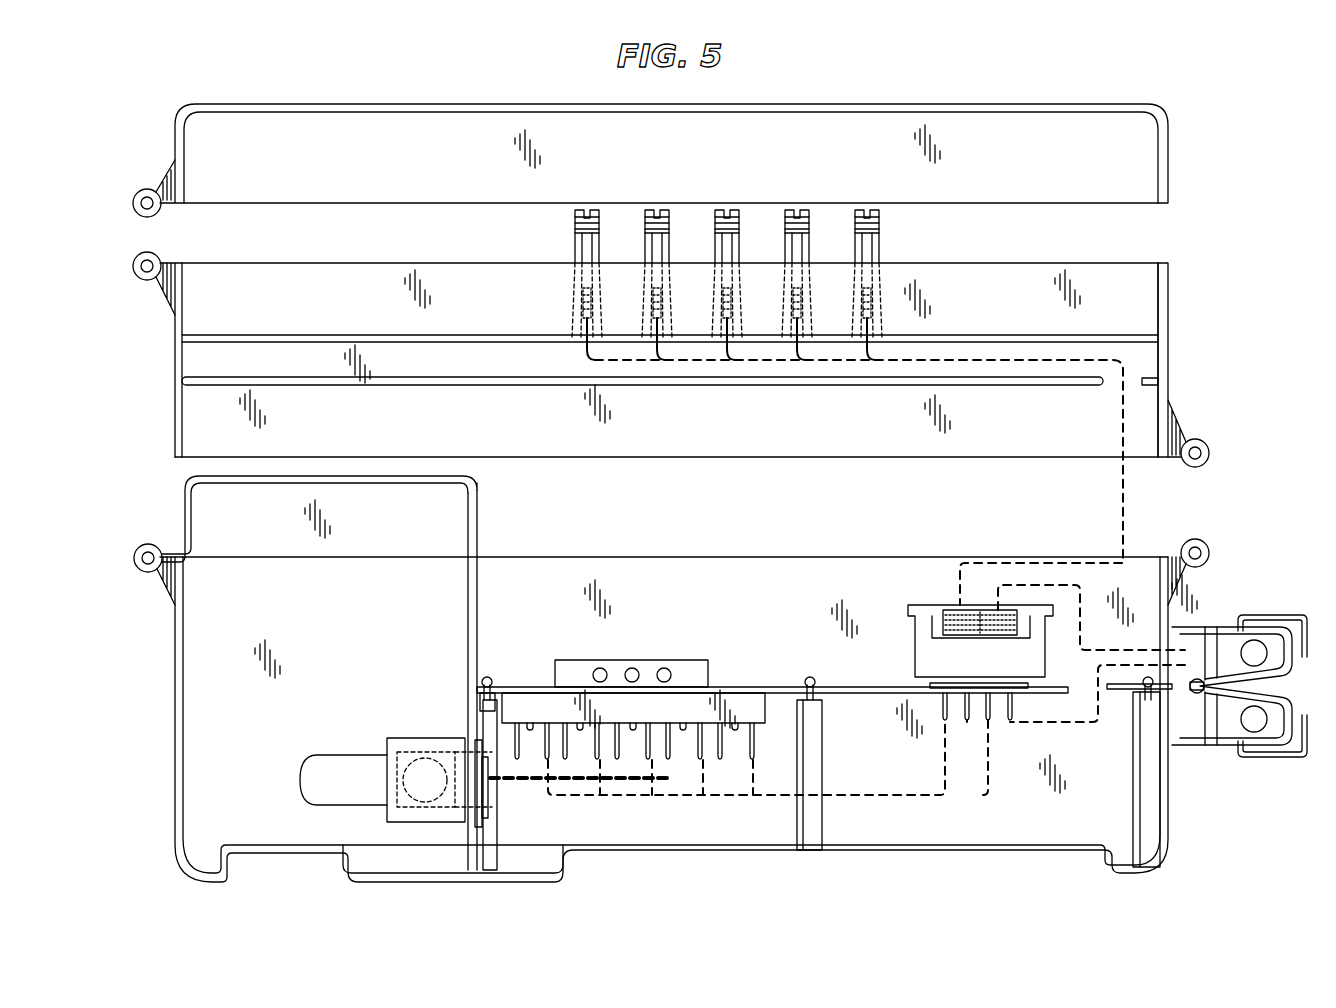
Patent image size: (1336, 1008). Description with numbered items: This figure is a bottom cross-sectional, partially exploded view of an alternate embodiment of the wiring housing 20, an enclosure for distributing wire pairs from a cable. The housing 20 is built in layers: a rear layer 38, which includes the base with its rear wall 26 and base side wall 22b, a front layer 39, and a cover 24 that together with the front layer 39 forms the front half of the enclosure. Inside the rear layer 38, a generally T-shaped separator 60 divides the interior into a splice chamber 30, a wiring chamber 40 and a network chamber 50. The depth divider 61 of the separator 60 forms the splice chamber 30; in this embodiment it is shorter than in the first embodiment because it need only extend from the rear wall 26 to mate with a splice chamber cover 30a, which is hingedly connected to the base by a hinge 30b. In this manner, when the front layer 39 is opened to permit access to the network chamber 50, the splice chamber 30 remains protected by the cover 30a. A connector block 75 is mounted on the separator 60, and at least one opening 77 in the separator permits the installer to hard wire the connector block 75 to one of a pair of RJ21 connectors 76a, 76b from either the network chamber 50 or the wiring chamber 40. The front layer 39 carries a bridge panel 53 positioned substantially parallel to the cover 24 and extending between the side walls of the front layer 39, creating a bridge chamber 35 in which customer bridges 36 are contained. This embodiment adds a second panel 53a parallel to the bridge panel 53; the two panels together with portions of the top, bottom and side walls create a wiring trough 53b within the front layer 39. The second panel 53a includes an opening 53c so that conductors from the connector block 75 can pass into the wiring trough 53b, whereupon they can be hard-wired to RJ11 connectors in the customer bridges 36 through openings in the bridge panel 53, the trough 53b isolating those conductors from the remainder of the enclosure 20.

The wiring housing 20 is at (800, 86).
The cover 24 is at (1142, 104).
The bridge chamber 35 is at (970, 246).
The customer bridges 36 is at (725, 210).
The front layer 39 is at (158, 365).
The bridge panel 53 is at (975, 336).
The second panel 53a is at (978, 387).
The wiring trough 53b is at (1151, 358).
The opening 53c is at (1113, 380).
The splice chamber cover 30a is at (185, 480).
The hinge 30b is at (143, 545).
The rear layer 38 is at (158, 661).
The base side wall 22b is at (178, 735).
The rear wall 26 is at (376, 881).
The depth divider 61 is at (468, 592).
The splice chamber 30 is at (337, 655).
The separator 60 is at (500, 687).
The network chamber 50 is at (757, 617).
The wiring chamber 40 is at (897, 777).
The connector block 75 is at (915, 605).
The opening 77 is at (1075, 685).
The RJ21 connector 76a is at (1268, 616).
The RJ21 connector 76b is at (1268, 757).